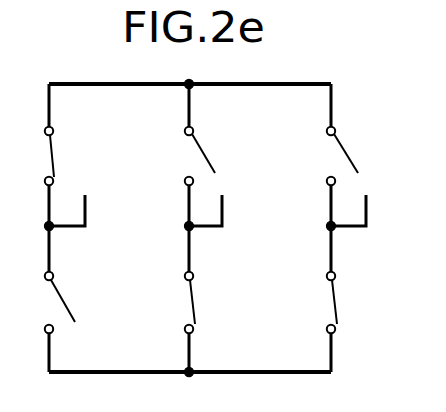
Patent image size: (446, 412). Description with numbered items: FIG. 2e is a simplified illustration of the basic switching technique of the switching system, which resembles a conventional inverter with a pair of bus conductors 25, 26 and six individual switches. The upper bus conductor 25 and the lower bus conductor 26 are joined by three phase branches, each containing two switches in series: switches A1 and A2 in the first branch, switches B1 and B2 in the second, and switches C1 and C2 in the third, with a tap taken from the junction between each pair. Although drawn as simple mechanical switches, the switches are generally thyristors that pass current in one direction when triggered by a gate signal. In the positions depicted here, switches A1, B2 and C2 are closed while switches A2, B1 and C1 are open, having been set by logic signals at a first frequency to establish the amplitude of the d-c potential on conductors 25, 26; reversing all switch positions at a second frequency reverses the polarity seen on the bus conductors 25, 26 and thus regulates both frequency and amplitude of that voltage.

The bus conductor 25 is at (263, 84).
The bus conductor 26 is at (243, 372).
The switch A1 is at (33, 156).
The switch A2 is at (44, 302).
The switch B1 is at (184, 156).
The switch B2 is at (174, 302).
The switch C1 is at (326, 156).
The switch C2 is at (316, 302).